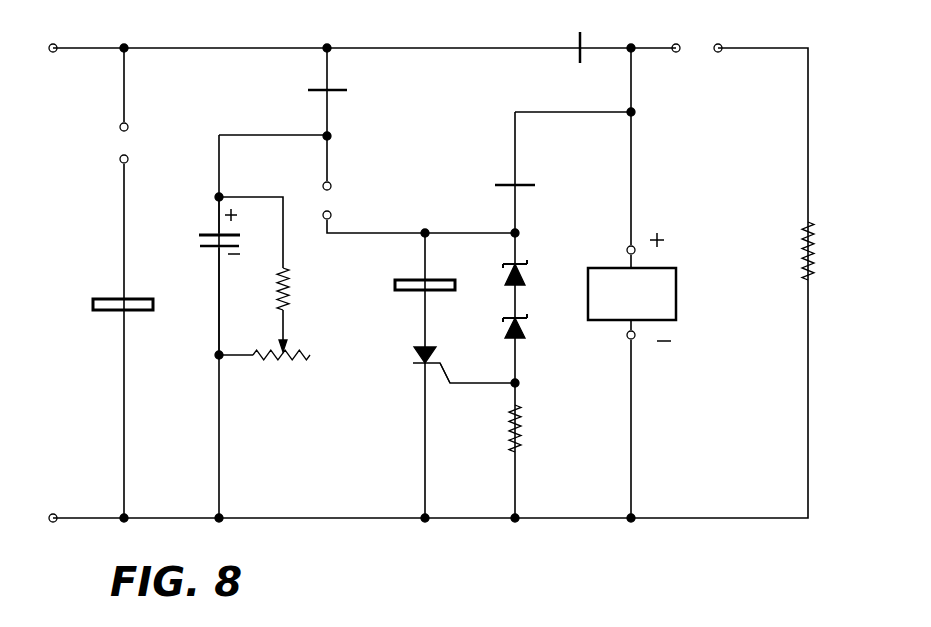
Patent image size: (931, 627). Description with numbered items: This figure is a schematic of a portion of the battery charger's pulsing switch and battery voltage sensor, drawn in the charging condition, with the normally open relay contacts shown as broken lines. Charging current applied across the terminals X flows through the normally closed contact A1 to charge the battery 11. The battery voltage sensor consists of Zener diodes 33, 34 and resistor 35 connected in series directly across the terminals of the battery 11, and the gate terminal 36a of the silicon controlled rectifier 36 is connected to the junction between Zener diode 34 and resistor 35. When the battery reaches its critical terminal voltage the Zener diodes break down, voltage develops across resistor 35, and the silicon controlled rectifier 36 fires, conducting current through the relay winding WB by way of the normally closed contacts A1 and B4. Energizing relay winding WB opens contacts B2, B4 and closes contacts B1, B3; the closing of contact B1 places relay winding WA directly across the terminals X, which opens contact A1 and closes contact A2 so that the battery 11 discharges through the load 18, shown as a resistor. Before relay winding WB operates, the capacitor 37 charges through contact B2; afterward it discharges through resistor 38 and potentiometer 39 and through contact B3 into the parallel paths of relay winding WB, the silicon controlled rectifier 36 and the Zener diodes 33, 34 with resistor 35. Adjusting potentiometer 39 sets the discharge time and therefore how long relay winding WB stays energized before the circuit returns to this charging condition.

The terminals X is at (57, 55).
The relay contact B1 is at (151, 136).
The relay contact B2 is at (342, 94).
The relay contact B3 is at (351, 198).
The relay contact B4 is at (529, 188).
The relay contact A1 is at (577, 62).
The relay contact A2 is at (693, 24).
The relay winding WA is at (125, 320).
The relay winding WB is at (413, 292).
The capacitor 37 is at (203, 232).
The resistor 38 is at (289, 274).
The potentiometer 39 is at (283, 360).
The silicon controlled rectifier 36 is at (412, 350).
The gate terminal 36a is at (455, 390).
The Zener diode 33 is at (518, 262).
The Zener diode 34 is at (518, 316).
The resistor 35 is at (518, 452).
The battery 11 is at (670, 267).
The load 18 is at (805, 226).